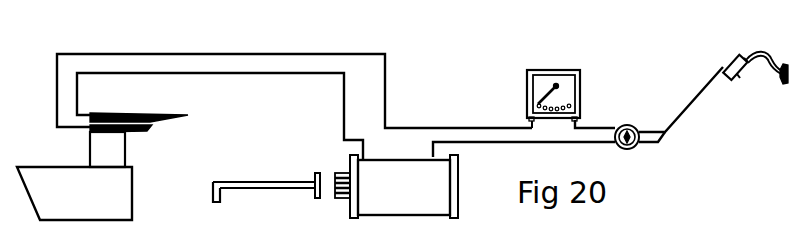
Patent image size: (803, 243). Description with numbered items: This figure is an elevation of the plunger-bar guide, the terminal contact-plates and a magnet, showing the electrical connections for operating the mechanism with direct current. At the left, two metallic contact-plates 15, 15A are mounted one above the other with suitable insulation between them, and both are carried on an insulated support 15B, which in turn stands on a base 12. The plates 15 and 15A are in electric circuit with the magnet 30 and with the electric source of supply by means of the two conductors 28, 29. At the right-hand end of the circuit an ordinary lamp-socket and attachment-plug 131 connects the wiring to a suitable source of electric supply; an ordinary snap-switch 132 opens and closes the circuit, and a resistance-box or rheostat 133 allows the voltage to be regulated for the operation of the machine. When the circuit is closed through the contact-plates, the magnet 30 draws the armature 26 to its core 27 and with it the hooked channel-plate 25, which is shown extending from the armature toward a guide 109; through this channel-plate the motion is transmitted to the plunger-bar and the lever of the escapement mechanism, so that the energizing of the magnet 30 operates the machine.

The base 12 is at (74, 193).
The metallic contact-plate 15 is at (134, 113).
The metallic contact-plate 15A is at (146, 129).
The insulated support 15B is at (107, 149).
The hooked channel-plate 25 is at (258, 182).
The armature 26 is at (315, 200).
The core 27 is at (344, 198).
The negative lead 28 is at (247, 78).
The positive lead 29 is at (243, 53).
The magnet 30 is at (482, 180).
The bracket 109 is at (213, 190).
The lamp-socket and attachment-plug 131 is at (740, 57).
The snap-switch 132 is at (625, 125).
The resistance-box or rheostat 133 is at (565, 88).